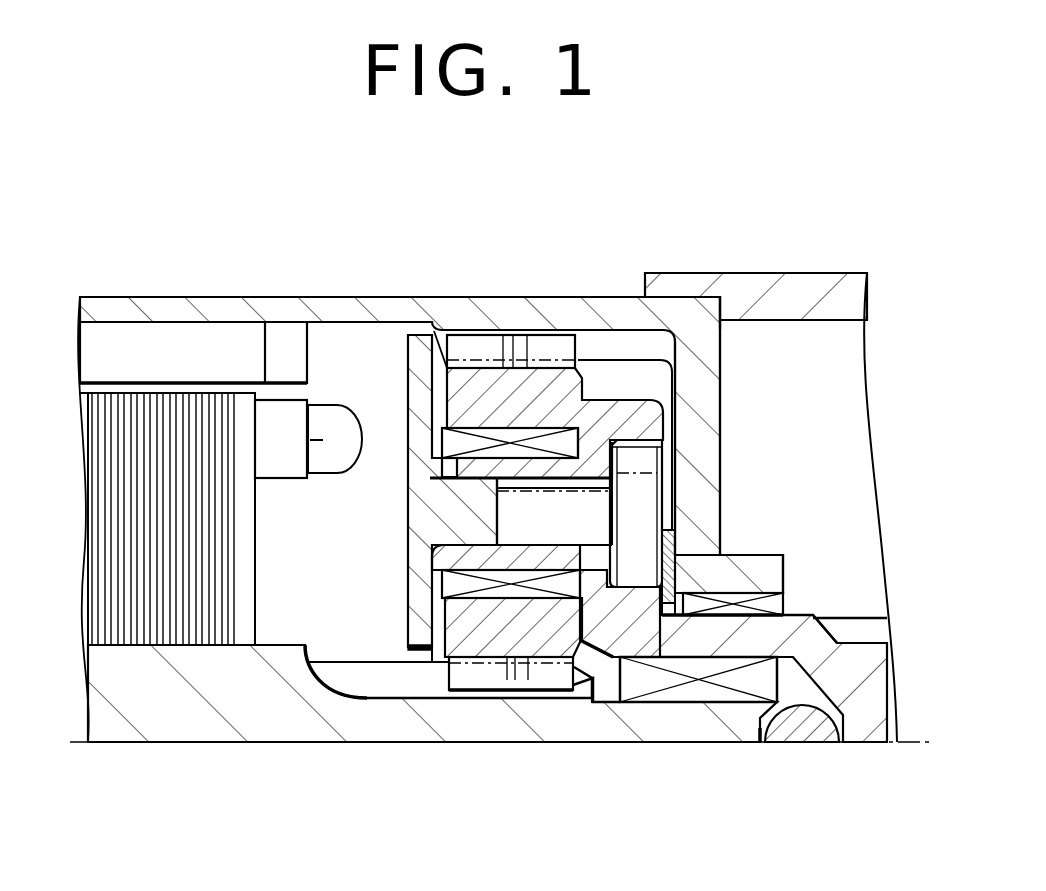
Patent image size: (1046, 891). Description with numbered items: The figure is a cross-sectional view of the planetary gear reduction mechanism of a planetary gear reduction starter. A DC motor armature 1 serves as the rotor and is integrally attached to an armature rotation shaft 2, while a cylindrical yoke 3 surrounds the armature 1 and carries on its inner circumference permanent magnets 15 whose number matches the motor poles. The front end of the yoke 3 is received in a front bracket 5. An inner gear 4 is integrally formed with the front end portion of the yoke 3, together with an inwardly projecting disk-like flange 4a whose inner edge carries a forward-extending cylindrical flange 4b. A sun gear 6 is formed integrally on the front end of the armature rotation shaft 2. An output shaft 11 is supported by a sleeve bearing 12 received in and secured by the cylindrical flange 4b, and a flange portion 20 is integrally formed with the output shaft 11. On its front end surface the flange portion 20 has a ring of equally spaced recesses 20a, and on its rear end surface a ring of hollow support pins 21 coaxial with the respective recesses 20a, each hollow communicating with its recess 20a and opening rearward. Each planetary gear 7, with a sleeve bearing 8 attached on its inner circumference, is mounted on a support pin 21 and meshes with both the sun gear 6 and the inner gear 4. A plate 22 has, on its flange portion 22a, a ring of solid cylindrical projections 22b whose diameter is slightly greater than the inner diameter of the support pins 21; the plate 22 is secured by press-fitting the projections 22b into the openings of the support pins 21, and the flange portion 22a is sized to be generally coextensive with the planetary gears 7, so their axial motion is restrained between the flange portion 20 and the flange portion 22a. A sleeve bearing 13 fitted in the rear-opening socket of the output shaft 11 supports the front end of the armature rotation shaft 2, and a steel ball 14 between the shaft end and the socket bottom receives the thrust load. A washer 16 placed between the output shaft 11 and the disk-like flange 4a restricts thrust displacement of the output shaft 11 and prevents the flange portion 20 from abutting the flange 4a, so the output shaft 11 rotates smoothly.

The DC motor armature 1 is at (112, 562).
The armature rotation shaft 2 is at (273, 720).
The cylindrical yoke 3 is at (273, 312).
The inner gear 4 is at (571, 315).
The disk-like flange 4a is at (717, 395).
The cylindrical flange 4b is at (770, 565).
The front bracket 5 is at (800, 292).
The sun gear 6 is at (423, 680).
The planetary gear 7 is at (490, 637).
The sleeve bearing 8 is at (440, 593).
The output shaft 11 is at (867, 698).
The sleeve bearing 12 is at (777, 606).
The sleeve bearing 13 is at (697, 692).
The steel ball 14 is at (803, 732).
The permanent magnets 15 is at (176, 345).
The washer 16 is at (670, 548).
The flange portion 20 is at (653, 428).
The recesses 20a is at (647, 478).
The support pins 21 is at (455, 553).
The plate 22 is at (405, 355).
The flange portion 22a is at (415, 422).
The solid cylindrical projections 22b is at (440, 498).